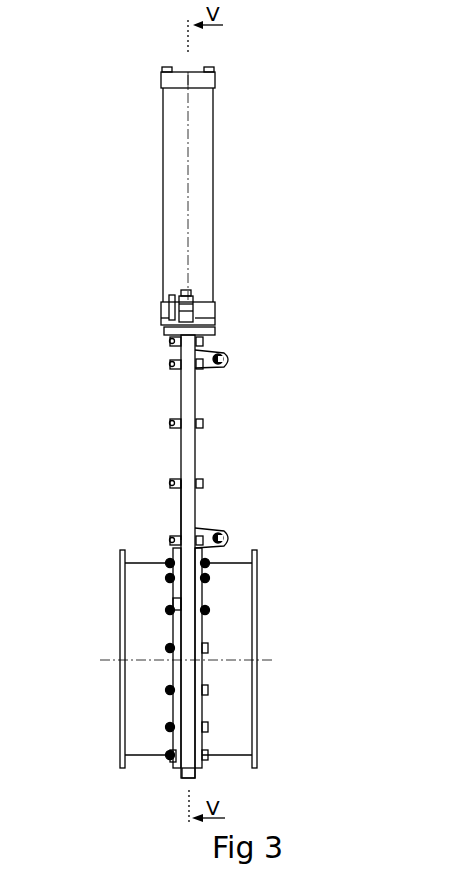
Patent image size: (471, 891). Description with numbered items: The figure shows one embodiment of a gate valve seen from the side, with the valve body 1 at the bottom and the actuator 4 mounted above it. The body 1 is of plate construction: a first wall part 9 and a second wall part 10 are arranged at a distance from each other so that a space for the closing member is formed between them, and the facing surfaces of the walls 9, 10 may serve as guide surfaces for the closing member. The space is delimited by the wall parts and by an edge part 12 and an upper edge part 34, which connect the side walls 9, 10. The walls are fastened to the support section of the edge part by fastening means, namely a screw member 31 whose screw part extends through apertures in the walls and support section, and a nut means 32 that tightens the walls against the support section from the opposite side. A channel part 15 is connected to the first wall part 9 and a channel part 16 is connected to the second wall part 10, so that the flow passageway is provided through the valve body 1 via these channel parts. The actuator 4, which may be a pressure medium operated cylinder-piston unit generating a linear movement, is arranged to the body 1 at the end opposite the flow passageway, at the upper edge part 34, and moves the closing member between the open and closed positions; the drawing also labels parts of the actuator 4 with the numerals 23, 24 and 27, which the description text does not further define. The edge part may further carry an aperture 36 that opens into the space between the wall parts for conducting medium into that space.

The body 1 is at (288, 444).
The actuator 4 is at (200, 176).
The first wall part 9 is at (204, 508).
The second wall part 10 is at (172, 508).
The edge part 12 is at (186, 782).
The channel part 15 is at (186, 650).
The channel part 16 is at (137, 750).
The lower actuator cap 23 is at (215, 307).
The upper actuator cap 24 is at (208, 80).
The actuator cylinder 27 is at (212, 236).
The screw member 31 is at (205, 428).
The nut means 32 is at (171, 421).
The upper edge part 34 is at (211, 335).
The aperture 36 is at (186, 292).